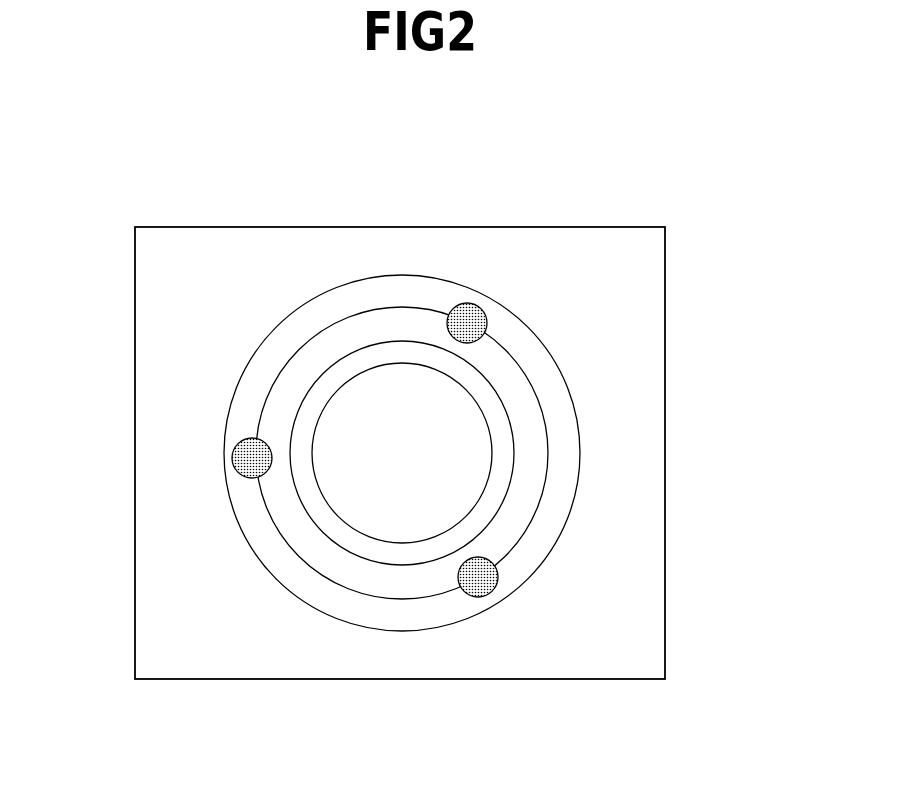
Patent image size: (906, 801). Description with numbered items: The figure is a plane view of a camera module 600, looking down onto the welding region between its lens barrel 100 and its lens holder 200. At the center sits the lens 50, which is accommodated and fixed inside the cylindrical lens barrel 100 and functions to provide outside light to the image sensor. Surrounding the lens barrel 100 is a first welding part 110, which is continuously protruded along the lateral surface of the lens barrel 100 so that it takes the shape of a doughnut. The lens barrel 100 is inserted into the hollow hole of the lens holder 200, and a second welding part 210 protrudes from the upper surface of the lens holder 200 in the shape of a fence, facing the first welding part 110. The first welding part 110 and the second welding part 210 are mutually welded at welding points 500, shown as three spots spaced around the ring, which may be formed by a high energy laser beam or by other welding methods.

The camera module 600 is at (549, 214).
The lens holder 200 is at (627, 344).
The second welding part 210 is at (245, 394).
The lens barrel 100 is at (512, 478).
The first welding part 110 is at (533, 438).
The lens 50 is at (403, 390).
The welding point 500 is at (232, 458).